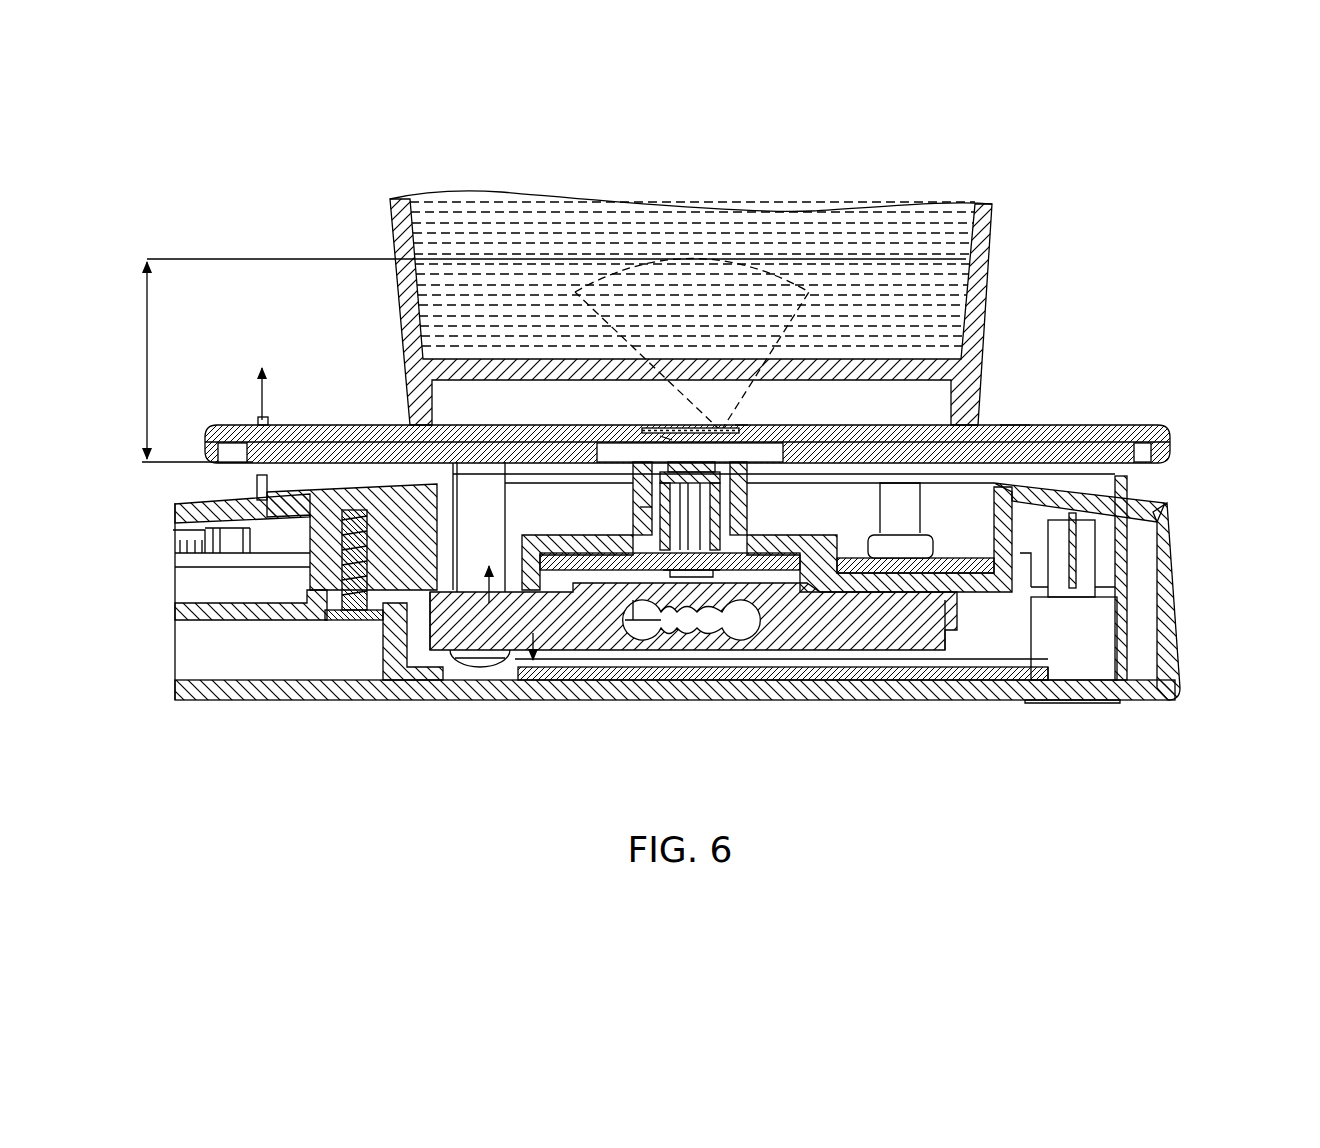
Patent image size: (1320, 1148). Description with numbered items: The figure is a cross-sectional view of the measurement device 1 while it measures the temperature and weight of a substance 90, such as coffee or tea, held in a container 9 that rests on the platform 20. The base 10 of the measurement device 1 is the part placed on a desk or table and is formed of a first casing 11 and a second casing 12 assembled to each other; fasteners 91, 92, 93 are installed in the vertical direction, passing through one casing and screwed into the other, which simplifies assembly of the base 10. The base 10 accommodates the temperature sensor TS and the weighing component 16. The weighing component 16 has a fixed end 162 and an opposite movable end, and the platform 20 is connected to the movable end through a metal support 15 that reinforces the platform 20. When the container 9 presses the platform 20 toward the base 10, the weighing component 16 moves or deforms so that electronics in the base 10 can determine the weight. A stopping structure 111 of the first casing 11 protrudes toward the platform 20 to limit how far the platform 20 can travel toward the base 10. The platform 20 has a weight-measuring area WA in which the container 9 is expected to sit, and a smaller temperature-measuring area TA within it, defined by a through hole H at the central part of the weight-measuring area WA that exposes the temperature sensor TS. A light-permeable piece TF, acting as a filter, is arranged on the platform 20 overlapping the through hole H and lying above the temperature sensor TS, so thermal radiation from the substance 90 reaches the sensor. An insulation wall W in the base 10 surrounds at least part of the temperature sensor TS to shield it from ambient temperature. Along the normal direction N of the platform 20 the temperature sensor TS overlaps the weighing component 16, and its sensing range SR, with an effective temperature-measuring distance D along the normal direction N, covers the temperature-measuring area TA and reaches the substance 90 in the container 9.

The measurement device 1 is at (1063, 750).
The container 9 is at (980, 276).
The substance 90 is at (520, 232).
The base 10 is at (1204, 616).
The first casing 11 is at (1174, 575).
The second casing 12 is at (1131, 692).
The metal support 15 is at (308, 452).
The weighing component 16 is at (698, 658).
The fixed end 162 is at (462, 623).
The platform 20 is at (1148, 416).
The fastener 91 is at (353, 622).
The fastener 92 is at (486, 668).
The fastener 93 is at (897, 550).
The stopping structure 111 is at (255, 488).
The sensing range SR is at (809, 292).
The light-permeable piece TF is at (708, 426).
The temperature-measuring area TA is at (737, 424).
The temperature sensor TS is at (745, 473).
The weight-measuring area WA is at (1016, 422).
The insulation wall W is at (640, 507).
The through hole H is at (655, 434).
The effective temperature-measuring distance D is at (544, 360).
The normal direction N is at (262, 378).